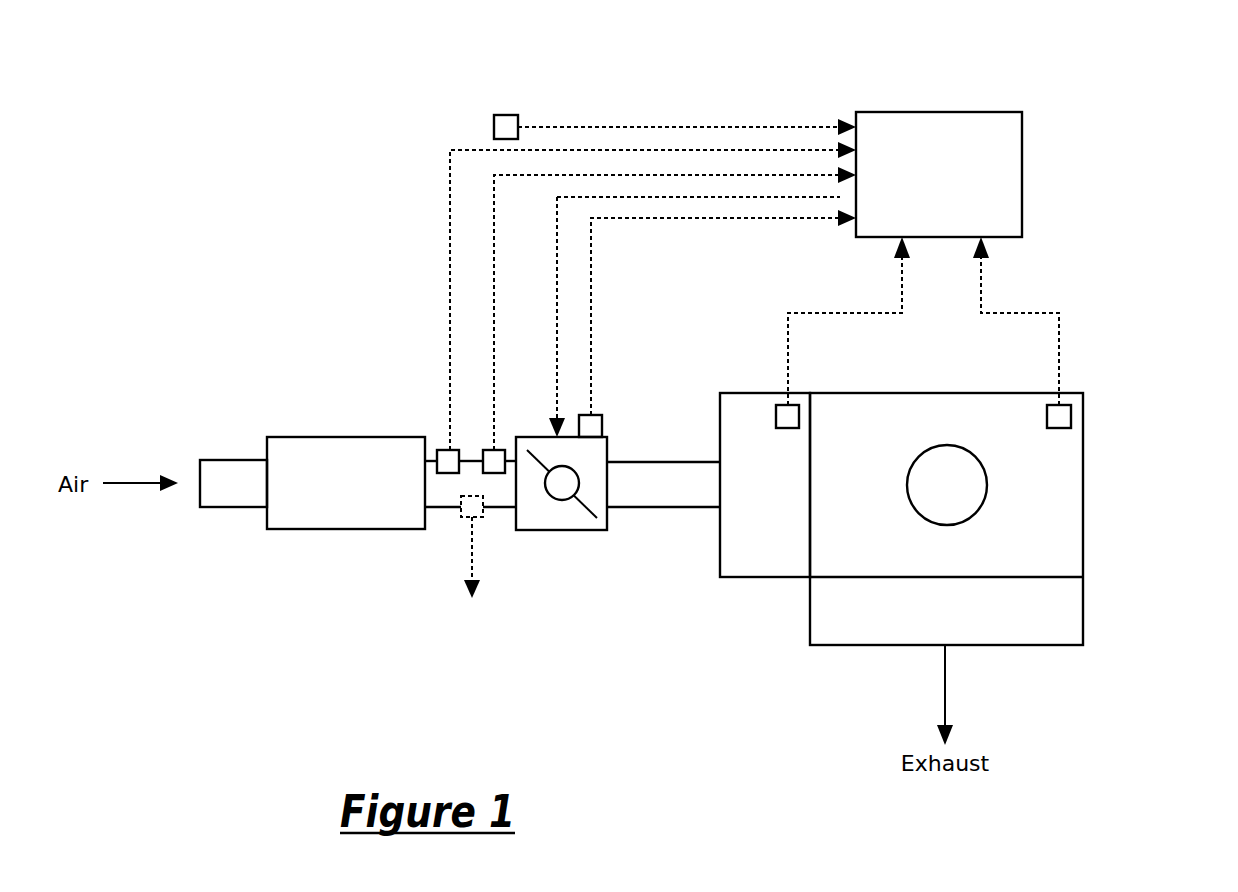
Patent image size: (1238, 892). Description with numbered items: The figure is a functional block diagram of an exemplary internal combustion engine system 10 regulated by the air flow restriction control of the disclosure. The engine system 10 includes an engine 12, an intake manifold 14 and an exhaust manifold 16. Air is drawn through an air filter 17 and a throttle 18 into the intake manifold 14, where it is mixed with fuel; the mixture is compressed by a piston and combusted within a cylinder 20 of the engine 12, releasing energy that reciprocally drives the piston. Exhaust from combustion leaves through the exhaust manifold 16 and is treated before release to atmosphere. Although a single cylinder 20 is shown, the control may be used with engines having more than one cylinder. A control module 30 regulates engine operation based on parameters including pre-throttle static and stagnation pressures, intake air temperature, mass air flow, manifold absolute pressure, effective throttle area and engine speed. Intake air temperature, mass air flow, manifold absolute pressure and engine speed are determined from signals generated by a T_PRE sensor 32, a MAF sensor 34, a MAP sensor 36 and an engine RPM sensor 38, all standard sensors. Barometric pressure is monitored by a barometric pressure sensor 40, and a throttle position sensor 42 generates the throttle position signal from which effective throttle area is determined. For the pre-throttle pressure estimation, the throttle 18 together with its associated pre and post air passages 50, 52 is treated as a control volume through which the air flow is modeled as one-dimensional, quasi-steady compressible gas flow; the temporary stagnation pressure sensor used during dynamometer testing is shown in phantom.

The internal combustion engine system 10 is at (352, 231).
The engine 12 is at (1085, 517).
The intake manifold 14 is at (720, 568).
The exhaust manifold 16 is at (810, 635).
The air filter 17 is at (317, 437).
The throttle 18 is at (540, 530).
The cylinder 20 is at (983, 468).
The control module 30 is at (990, 112).
The T_PRE sensor 32 is at (443, 447).
The MAF sensor 34 is at (495, 448).
The MAP sensor 36 is at (783, 400).
The engine RPM sensor 38 is at (1070, 403).
The barometric pressure sensor 40 is at (507, 115).
The throttle position sensor 42 is at (600, 415).
The pre air passage 50 is at (459, 507).
The post air passage 52 is at (635, 508).